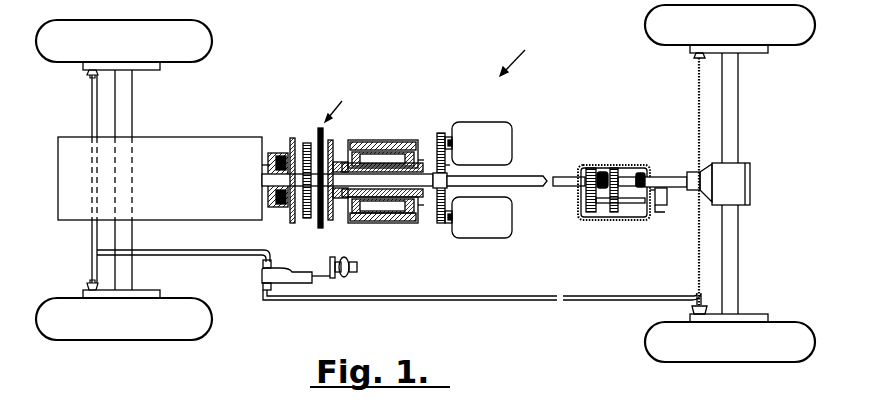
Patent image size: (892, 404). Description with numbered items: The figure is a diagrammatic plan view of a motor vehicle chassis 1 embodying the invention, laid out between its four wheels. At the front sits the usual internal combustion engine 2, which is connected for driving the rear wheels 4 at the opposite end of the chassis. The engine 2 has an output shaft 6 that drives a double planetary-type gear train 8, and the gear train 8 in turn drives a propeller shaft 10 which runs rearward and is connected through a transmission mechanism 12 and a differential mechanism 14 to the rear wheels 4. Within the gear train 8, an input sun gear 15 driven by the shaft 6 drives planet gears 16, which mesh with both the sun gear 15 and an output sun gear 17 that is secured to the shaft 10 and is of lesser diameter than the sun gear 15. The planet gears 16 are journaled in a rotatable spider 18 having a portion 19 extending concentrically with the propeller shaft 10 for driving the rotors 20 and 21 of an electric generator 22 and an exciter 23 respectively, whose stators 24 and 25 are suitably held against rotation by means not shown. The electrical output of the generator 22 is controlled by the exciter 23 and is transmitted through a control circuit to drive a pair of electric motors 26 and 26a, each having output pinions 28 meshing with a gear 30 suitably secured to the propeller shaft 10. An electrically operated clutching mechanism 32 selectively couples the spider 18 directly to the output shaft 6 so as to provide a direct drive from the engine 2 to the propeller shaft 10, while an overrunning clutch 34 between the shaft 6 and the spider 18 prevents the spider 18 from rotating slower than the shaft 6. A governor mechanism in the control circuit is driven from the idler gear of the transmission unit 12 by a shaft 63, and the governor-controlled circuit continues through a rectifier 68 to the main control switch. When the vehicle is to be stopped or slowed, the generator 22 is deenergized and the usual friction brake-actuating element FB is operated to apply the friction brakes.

The motor vehicle chassis 1 is at (518, 57).
The internal combustion engine 2 is at (177, 137).
The rear wheels 4 is at (783, 45).
The output shaft 6 is at (264, 182).
The double planetary-type gear train 8 is at (335, 104).
The propeller shaft 10 is at (522, 176).
The transmission mechanism 12 is at (620, 170).
The differential mechanism 14 is at (740, 167).
The input sun gear 15 is at (290, 212).
The planet gears 16 is at (318, 140).
The output sun gear 17 is at (322, 226).
The rotatable spider 18 is at (333, 140).
The portion of spider 19 is at (428, 150).
The rotor 20 is at (390, 152).
The rotor 21 is at (418, 205).
The electric generator 22 is at (382, 161).
The exciter 23 is at (440, 133).
The stator 24 is at (364, 152).
The stator 25 is at (442, 170).
The electric motor 26 is at (492, 126).
The electric motor 26a is at (505, 230).
The output pinions 28 is at (449, 138).
The gear 30 is at (445, 165).
The electrically operated clutching mechanism 32 is at (280, 152).
The overrunning clutch 34 is at (270, 165).
The shaft 63 is at (655, 212).
The rectifier 68 is at (662, 209).
The friction brake-actuating element FB is at (352, 278).